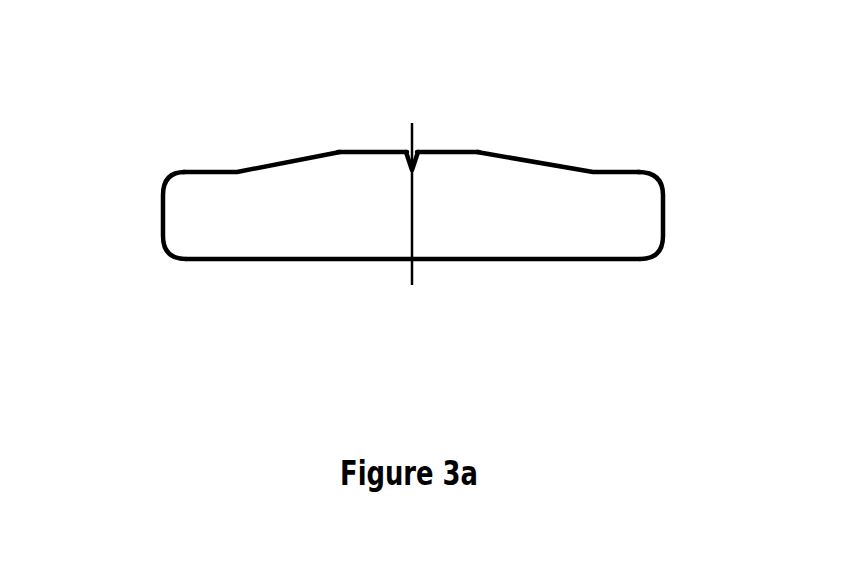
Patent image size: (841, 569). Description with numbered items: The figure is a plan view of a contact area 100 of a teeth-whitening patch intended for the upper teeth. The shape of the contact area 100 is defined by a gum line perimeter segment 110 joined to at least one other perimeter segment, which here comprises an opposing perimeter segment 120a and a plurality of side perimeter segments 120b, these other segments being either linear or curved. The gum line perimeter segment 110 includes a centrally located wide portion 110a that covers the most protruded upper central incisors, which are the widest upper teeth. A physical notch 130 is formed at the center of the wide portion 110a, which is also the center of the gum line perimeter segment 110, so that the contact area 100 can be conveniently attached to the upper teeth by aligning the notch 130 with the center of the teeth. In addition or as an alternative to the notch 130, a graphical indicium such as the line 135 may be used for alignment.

The contact area 100 is at (413, 191).
The gum line perimeter segment 110 is at (207, 163).
The wide portion 110a is at (390, 148).
The opposing perimeter segment 120a is at (470, 263).
The side perimeter segments 120b is at (160, 210).
The physical notch 130 is at (452, 148).
The line 135 is at (410, 210).